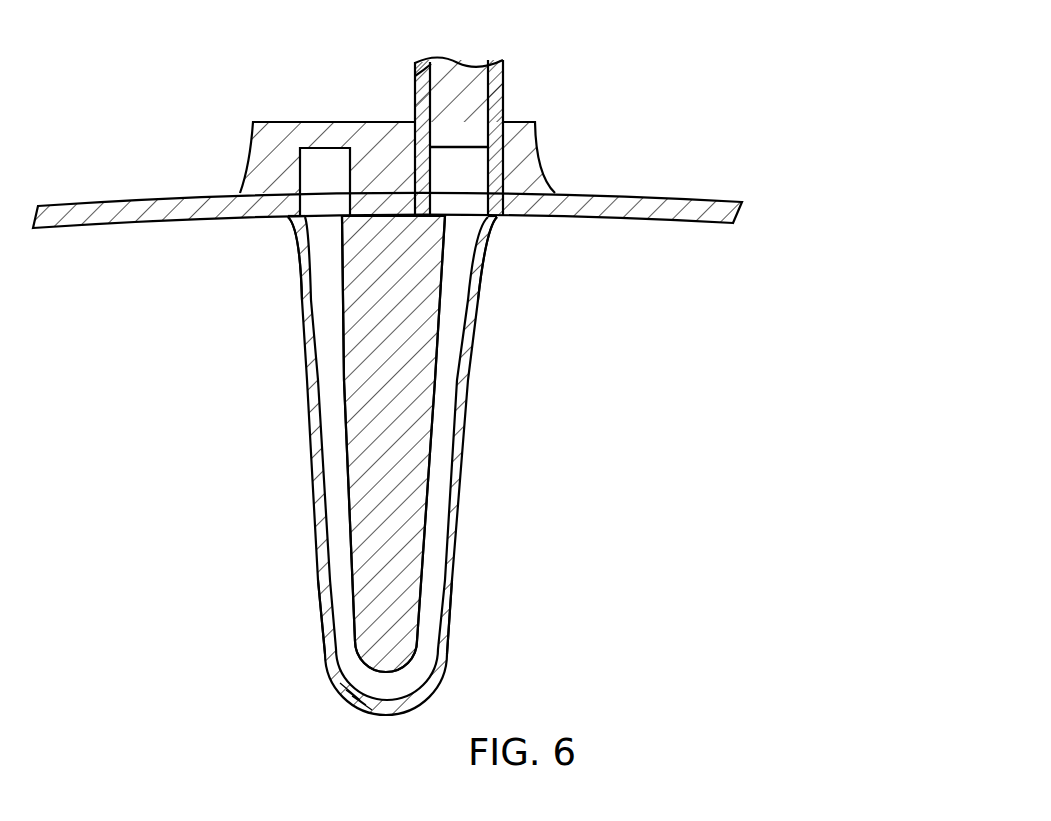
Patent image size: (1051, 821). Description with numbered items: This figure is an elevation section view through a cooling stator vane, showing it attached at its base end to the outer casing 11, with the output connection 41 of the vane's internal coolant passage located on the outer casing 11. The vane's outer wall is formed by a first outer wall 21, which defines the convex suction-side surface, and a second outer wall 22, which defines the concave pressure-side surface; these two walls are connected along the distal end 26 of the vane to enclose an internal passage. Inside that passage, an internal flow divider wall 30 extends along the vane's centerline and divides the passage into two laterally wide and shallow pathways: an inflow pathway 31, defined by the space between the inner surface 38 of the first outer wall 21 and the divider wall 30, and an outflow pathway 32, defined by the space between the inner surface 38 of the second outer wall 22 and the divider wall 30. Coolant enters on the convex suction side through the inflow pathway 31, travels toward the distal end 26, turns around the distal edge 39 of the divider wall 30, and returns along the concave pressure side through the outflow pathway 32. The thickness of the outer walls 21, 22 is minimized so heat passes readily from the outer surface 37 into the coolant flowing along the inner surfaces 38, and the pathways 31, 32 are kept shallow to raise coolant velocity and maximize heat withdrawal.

The outer casing 11 is at (601, 195).
The output connection 41 is at (503, 72).
The first outer wall 21 is at (310, 369).
The second outer wall 22 is at (476, 347).
The distal end 26 is at (380, 713).
The internal flow divider wall 30 is at (393, 418).
The inflow pathway 31 is at (337, 432).
The outflow pathway 32 is at (442, 527).
The outer surface 37 is at (328, 613).
The inner surface 38 is at (316, 306).
The distal edge of the divider wall 39 is at (390, 665).